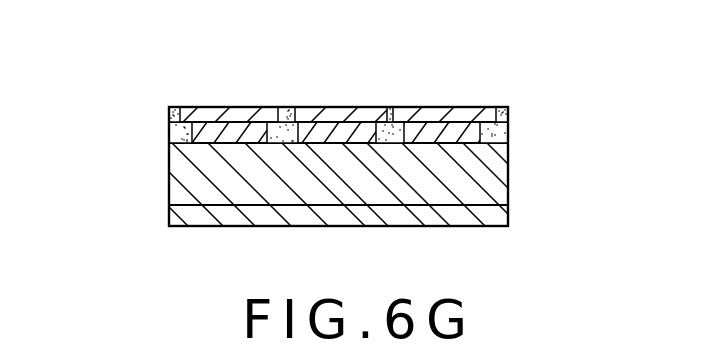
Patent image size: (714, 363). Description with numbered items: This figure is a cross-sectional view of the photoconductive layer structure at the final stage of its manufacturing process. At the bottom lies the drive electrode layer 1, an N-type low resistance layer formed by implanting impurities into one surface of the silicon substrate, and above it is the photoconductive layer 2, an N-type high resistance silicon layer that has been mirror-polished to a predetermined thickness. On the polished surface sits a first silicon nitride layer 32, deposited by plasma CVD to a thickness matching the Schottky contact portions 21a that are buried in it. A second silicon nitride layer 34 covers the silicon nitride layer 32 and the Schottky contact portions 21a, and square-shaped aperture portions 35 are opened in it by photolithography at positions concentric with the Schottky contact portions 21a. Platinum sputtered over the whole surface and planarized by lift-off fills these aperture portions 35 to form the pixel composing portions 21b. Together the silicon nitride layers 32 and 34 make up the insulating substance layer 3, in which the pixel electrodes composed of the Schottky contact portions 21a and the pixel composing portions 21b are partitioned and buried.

The drive electrode layer 1 is at (319, 220).
The photoconductive layer 2 is at (228, 181).
The insulating substance layer 3 is at (276, 112).
The silicon nitride layer 32 is at (170, 134).
The silicon nitride layer 34 is at (169, 112).
The aperture portions 35 is at (320, 113).
The Schottky contact portion 21a is at (343, 132).
The pixel composing portion 21b is at (345, 113).